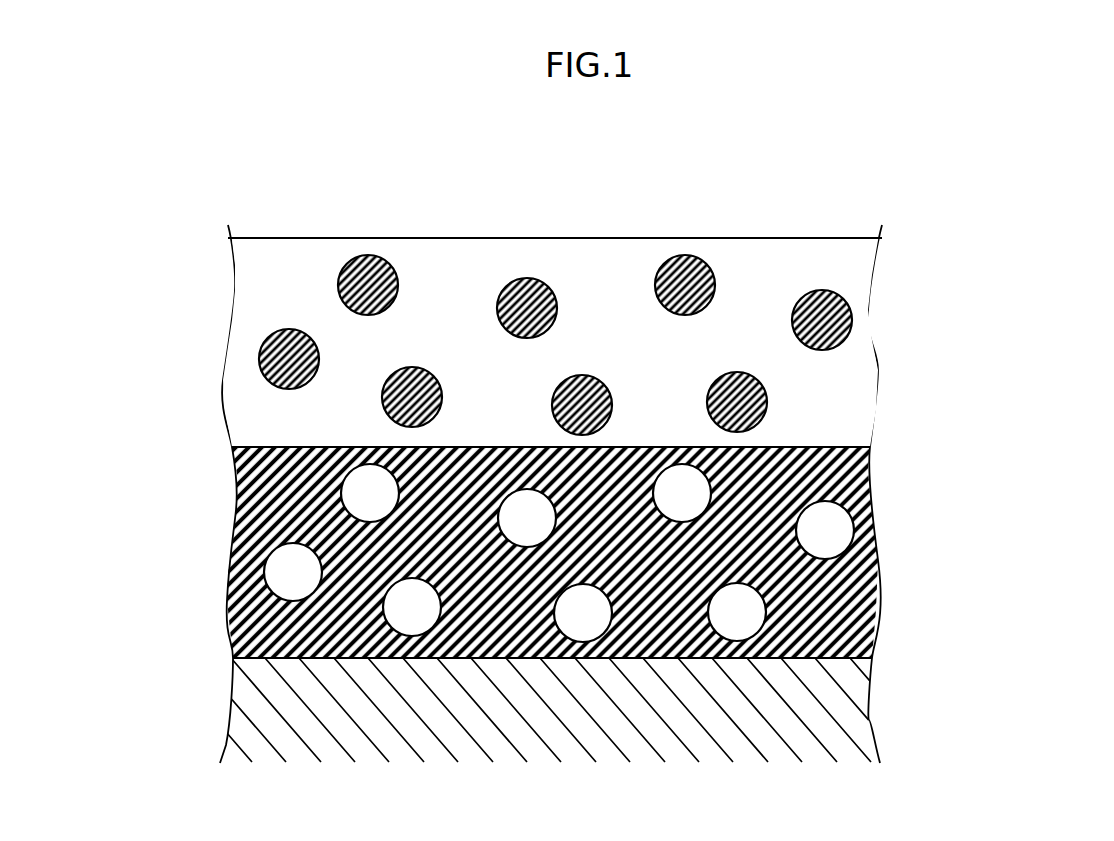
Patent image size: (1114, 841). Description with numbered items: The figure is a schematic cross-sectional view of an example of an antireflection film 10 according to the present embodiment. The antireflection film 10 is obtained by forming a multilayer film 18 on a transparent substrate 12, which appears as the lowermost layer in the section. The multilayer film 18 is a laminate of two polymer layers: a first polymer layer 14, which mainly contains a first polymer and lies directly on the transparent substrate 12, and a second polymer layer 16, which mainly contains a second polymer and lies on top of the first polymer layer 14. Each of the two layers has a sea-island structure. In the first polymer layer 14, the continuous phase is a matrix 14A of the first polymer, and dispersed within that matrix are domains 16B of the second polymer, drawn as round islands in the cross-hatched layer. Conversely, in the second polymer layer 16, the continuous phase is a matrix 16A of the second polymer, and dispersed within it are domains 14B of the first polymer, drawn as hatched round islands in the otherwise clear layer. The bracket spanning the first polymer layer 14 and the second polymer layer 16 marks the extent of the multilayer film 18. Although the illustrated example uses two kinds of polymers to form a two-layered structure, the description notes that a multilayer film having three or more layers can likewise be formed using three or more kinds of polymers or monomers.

The antireflection film 10 is at (967, 162).
The transparent substrate 12 is at (880, 708).
The first polymer layer 14 is at (882, 550).
The matrix of the first polymer 14A is at (238, 470).
The domains of the first polymer 14B is at (260, 367).
The second polymer layer 16 is at (882, 328).
The matrix of the second polymer 16A is at (240, 263).
The domains of the second polymer 16B is at (268, 577).
The multilayer film 18 is at (992, 242).